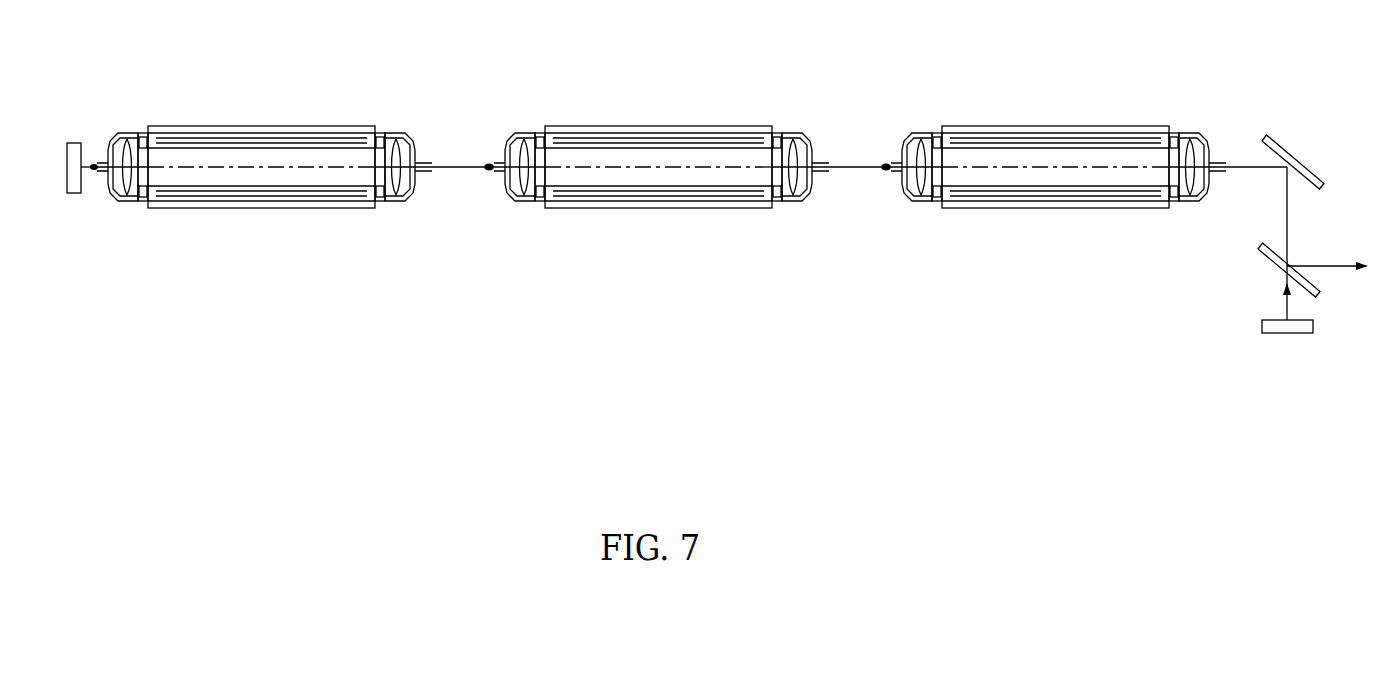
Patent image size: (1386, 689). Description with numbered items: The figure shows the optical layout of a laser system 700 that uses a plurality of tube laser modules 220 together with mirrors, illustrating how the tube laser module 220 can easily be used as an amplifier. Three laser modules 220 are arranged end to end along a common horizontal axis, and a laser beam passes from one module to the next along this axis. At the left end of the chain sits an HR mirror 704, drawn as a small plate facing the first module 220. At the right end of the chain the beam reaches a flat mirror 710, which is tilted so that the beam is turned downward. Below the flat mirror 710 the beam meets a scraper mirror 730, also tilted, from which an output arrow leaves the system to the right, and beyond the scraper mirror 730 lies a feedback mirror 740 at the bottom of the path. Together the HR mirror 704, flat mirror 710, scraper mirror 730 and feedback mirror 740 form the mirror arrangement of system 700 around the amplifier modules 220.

The system 700 is at (827, 398).
The HR mirror 704 is at (80, 125).
The tube laser module 220 is at (304, 120).
The flat mirror 710 is at (1292, 136).
The scraper mirror 730 is at (1257, 258).
The feedback mirror 740 is at (1273, 341).